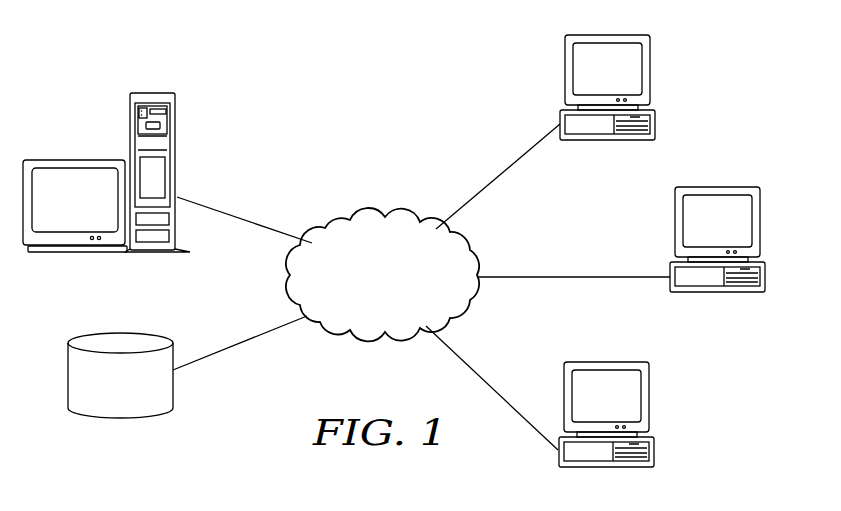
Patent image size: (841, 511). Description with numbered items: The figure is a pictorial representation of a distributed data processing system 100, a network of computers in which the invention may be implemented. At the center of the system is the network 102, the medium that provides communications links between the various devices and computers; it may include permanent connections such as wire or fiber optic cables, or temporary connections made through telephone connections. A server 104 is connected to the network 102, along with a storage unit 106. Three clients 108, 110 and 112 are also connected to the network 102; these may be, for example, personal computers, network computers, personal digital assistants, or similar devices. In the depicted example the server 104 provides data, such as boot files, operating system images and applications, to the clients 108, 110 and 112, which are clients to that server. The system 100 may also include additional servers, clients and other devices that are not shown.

The distributed data processing system 100 is at (256, 70).
The network 102 is at (403, 302).
The server 104 is at (130, 113).
The storage unit 106 is at (68, 375).
The client 108 is at (650, 80).
The client 110 is at (762, 232).
The client 112 is at (648, 402).